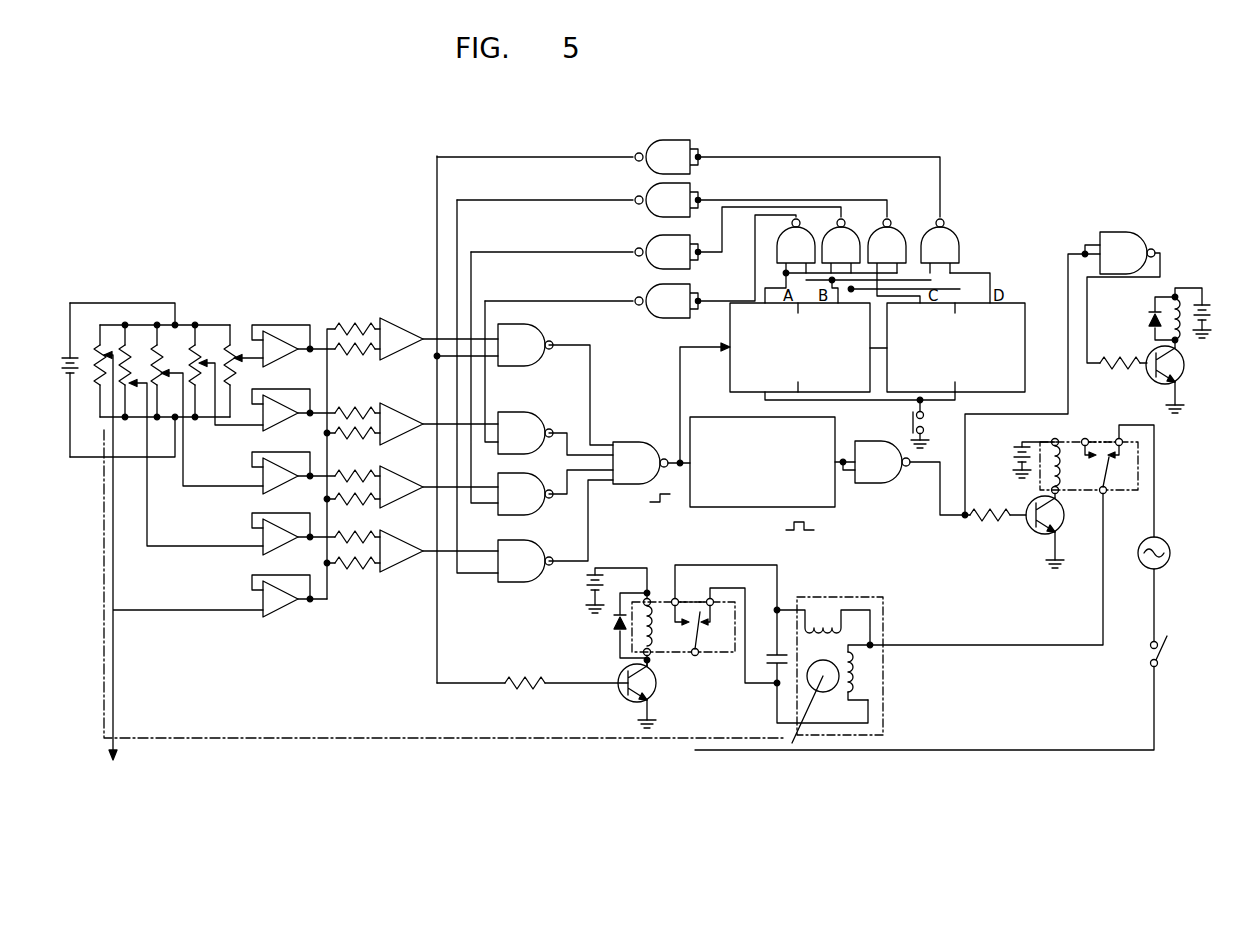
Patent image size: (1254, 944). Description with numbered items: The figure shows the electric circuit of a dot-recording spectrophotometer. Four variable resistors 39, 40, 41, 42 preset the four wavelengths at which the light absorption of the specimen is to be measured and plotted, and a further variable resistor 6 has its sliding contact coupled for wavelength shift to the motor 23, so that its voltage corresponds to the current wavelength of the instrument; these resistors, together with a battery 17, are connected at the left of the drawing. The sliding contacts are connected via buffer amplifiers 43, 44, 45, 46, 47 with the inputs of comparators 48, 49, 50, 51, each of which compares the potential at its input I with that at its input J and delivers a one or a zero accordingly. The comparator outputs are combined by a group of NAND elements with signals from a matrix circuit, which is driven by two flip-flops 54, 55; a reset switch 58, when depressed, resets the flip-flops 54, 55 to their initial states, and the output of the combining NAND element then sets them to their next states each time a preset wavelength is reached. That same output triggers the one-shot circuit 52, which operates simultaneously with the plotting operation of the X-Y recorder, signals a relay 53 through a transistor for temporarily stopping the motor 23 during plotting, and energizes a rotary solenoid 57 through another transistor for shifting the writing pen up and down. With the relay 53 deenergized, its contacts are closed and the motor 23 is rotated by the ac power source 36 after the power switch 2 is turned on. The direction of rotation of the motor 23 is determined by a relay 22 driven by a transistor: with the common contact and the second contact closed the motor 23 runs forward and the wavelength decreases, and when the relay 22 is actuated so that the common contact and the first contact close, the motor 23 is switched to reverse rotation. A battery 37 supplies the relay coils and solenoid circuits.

The power switch 2 is at (1148, 664).
The variable resistor 6 is at (102, 352).
The battery 17 is at (60, 366).
The relay 22 is at (668, 662).
The motor 23 is at (883, 668).
The ac power source 36 is at (1170, 556).
The battery 37 is at (1010, 446).
The variable resistor 39 is at (128, 358).
The variable resistor 40 is at (160, 358).
The variable resistor 41 is at (198, 358).
The variable resistor 42 is at (235, 353).
The buffer amplifier 43 is at (280, 352).
The buffer amplifier 44 is at (280, 416).
The buffer amplifier 45 is at (280, 479).
The buffer amplifier 46 is at (280, 540).
The buffer amplifier 47 is at (280, 602).
The comparator 48 is at (410, 329).
The comparator 49 is at (410, 415).
The comparator 50 is at (410, 479).
The comparator 51 is at (410, 544).
The one-shot circuit 52 is at (712, 417).
The relay 53 is at (1069, 502).
The flip-flop 54 is at (732, 321).
The flip-flop 55 is at (1025, 325).
The rotary solenoid 57 is at (1175, 296).
The reset switch 58 is at (925, 420).